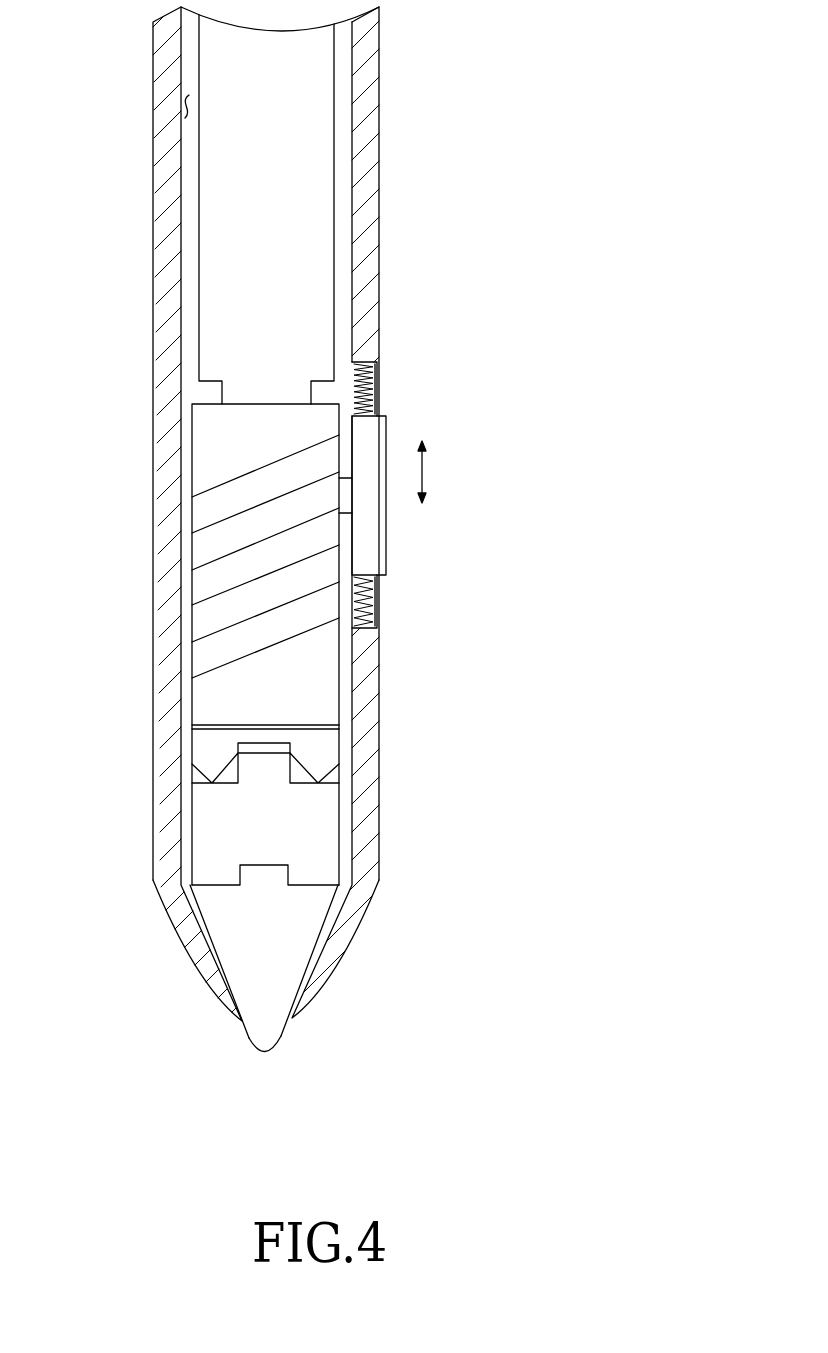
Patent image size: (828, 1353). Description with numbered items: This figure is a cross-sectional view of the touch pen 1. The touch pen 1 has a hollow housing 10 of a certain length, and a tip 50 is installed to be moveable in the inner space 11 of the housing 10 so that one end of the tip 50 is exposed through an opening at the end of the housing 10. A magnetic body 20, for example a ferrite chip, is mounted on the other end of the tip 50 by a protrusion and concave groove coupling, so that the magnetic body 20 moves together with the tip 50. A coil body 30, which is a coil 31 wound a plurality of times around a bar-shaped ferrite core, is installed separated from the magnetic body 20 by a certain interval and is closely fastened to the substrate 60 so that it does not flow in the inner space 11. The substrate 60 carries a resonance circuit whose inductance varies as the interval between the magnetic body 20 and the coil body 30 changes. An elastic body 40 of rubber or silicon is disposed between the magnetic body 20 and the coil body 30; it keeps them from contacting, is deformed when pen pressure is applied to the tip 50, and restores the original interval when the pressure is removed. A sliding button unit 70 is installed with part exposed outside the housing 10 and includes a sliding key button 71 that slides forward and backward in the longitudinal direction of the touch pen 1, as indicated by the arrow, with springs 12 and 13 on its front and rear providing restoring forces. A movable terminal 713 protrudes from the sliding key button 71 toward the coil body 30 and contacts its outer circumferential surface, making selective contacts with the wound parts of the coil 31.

The touch pen 1 is at (578, 187).
The hollow housing 10 is at (165, 208).
The inner space 11 is at (186, 110).
The spring 12 is at (365, 612).
The spring 13 is at (363, 383).
The magnetic body 20 is at (204, 832).
The coil body 30 is at (210, 432).
The coil 31 is at (215, 553).
The elastic body 40 is at (206, 743).
The tip 50 is at (257, 1022).
The substrate 60 is at (313, 120).
The sliding button unit 70 is at (385, 442).
The sliding key button 71 is at (375, 560).
The movable terminal 713 is at (341, 515).